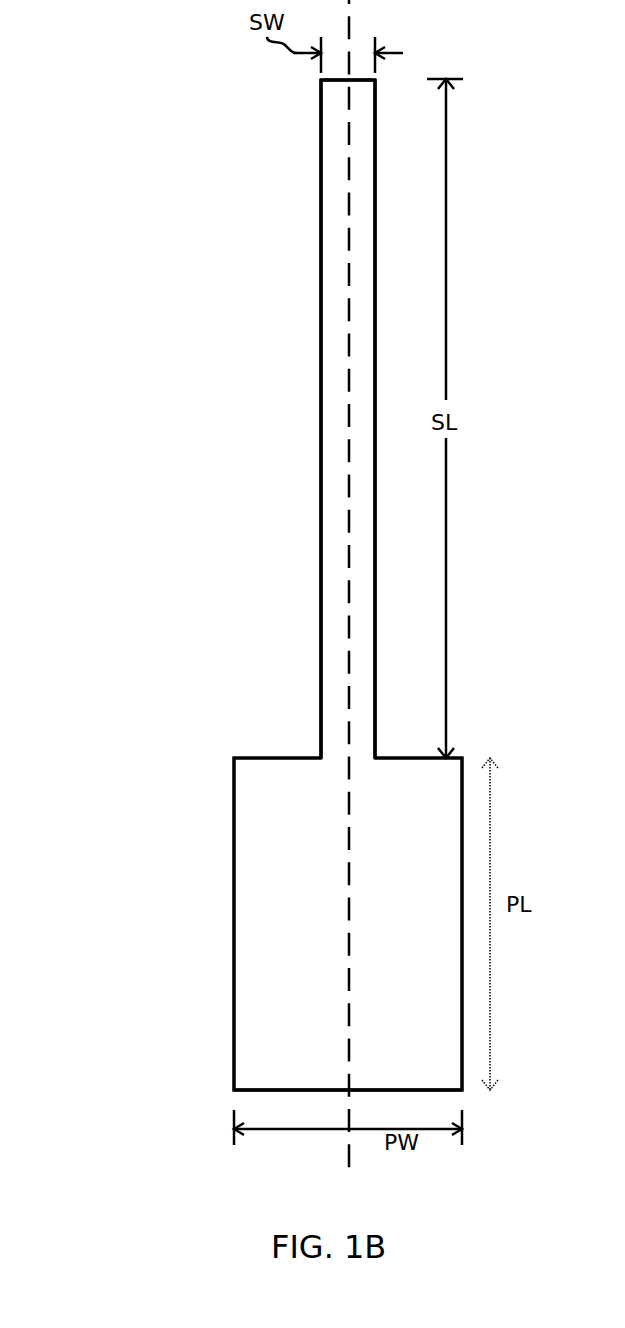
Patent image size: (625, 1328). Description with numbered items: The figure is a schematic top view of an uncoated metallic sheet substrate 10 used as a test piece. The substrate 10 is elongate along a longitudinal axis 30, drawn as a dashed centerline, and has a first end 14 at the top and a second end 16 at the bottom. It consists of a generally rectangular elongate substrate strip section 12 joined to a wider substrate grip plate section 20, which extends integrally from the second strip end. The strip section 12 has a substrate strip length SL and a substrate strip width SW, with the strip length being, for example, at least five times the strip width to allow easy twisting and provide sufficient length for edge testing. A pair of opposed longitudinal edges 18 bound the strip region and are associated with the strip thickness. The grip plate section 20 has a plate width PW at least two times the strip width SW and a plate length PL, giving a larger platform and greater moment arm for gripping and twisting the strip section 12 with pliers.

The metallic sheet substrate 10 is at (70, 65).
The elongate substrate strip section 12 is at (253, 438).
The first end 14 is at (316, 103).
The second end 16 is at (222, 1086).
The opposed longitudinal edges 18 is at (320, 392).
The substrate grip plate section 20 is at (278, 964).
The longitudinal axis 30 is at (348, 1160).